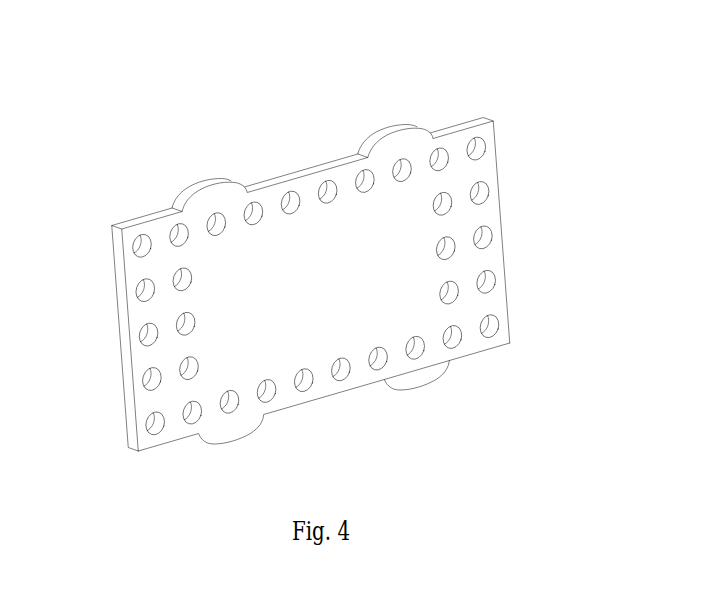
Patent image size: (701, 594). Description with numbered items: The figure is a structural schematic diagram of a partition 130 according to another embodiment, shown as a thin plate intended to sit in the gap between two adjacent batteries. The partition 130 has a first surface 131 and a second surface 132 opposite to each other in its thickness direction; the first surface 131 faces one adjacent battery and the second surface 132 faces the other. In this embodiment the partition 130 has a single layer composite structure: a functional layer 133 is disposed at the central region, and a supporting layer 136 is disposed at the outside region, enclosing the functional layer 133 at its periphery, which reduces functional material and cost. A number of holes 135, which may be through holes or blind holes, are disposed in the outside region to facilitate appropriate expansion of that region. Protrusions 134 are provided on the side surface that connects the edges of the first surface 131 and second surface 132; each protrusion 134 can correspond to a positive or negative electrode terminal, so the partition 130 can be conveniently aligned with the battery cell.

The partition 130 is at (319, 269).
The first surface 131 is at (325, 397).
The second surface 132 is at (120, 335).
The functional layer 133 is at (307, 332).
The protrusion 134 is at (432, 388).
The hole 135 is at (488, 233).
The supporting layer 136 is at (486, 303).